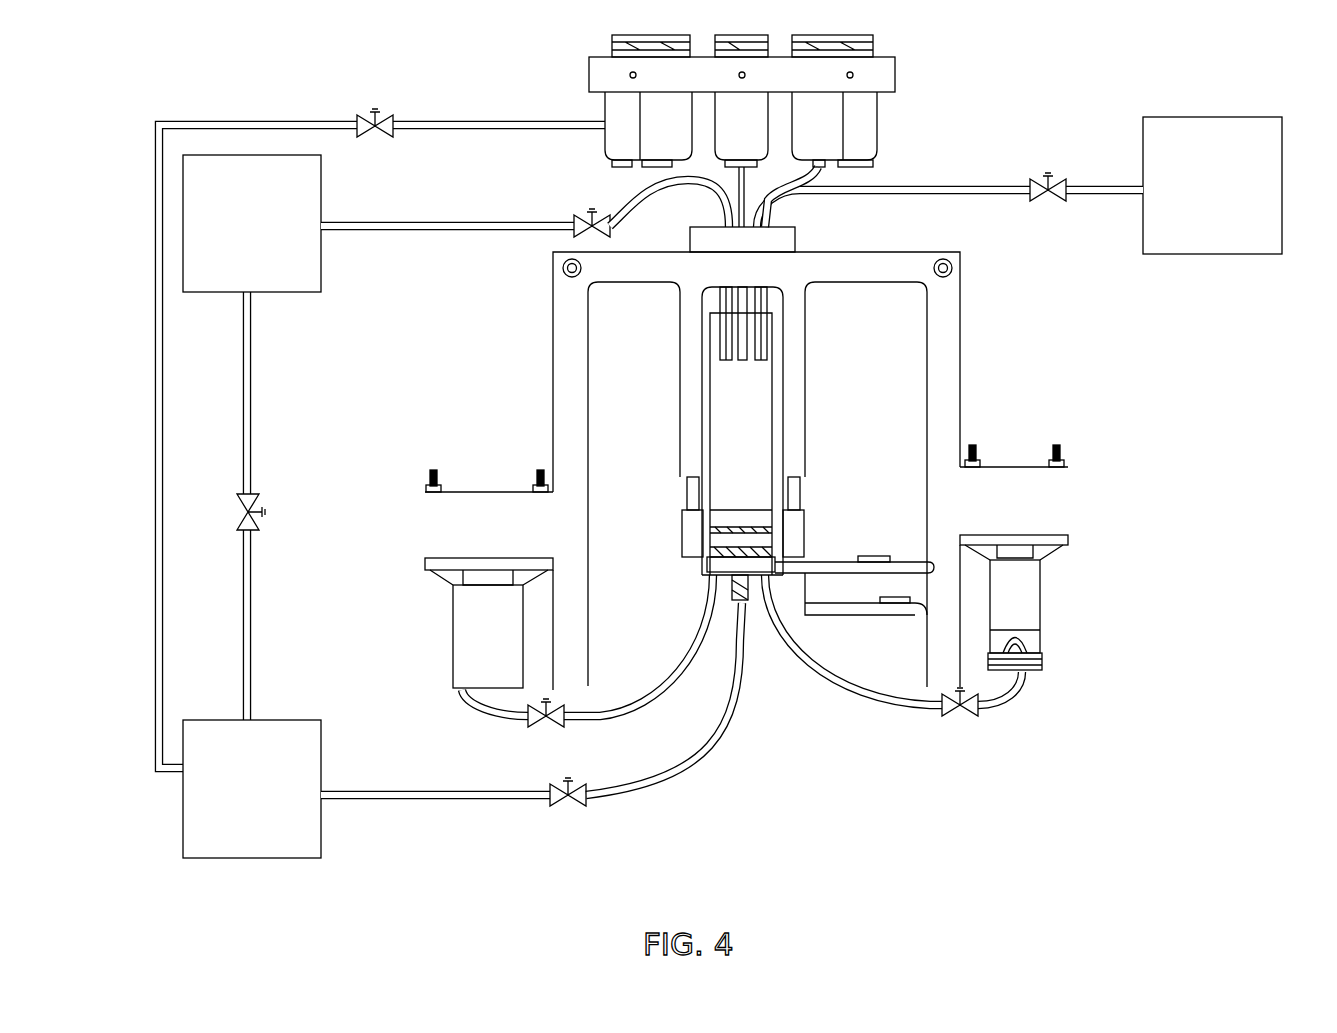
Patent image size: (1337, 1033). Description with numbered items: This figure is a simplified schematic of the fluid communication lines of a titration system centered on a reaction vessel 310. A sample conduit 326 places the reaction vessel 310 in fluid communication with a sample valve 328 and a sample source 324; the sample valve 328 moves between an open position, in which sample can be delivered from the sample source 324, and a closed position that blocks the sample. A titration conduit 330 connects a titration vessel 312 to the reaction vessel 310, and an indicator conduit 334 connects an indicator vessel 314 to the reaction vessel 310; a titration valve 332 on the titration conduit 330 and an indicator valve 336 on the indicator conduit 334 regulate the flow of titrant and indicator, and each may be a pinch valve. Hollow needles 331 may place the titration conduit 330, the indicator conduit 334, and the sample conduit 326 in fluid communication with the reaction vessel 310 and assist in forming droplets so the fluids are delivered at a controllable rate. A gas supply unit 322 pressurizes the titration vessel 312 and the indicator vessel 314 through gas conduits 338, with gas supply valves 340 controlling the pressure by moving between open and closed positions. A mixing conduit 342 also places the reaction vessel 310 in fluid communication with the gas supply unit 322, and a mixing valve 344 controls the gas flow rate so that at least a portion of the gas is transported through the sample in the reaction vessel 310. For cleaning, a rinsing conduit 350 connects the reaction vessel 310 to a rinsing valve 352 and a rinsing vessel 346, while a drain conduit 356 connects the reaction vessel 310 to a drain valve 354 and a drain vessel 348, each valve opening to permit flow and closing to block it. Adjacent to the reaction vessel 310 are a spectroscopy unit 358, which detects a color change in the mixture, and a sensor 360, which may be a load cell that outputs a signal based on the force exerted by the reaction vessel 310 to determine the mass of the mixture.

The reaction vessel 310 is at (723, 428).
The titration vessel 312 is at (322, 267).
The indicator vessel 314 is at (607, 110).
The gas supply unit 322 is at (322, 830).
The sample source 324 is at (1203, 255).
The sample conduit 326 is at (923, 194).
The sample valve 328 is at (1050, 176).
The titration conduit 330 is at (400, 230).
The hollow needle 331 is at (757, 358).
The titration valve 332 is at (590, 213).
The indicator conduit 334 is at (808, 181).
The indicator valve 336 is at (820, 163).
The gas conduit 338 is at (203, 121).
The gas supply valve 340 is at (376, 114).
The mixing conduit 342 is at (440, 800).
The mixing valve 344 is at (553, 805).
The rinsing vessel 346 is at (455, 643).
The drain vessel 348 is at (1040, 630).
The rinsing conduit 350 is at (613, 712).
The rinsing valve 352 is at (542, 720).
The drain valve 354 is at (953, 710).
The drain conduit 356 is at (837, 677).
The spectroscopy unit 358 is at (662, 494).
The sensor 360 is at (850, 537).